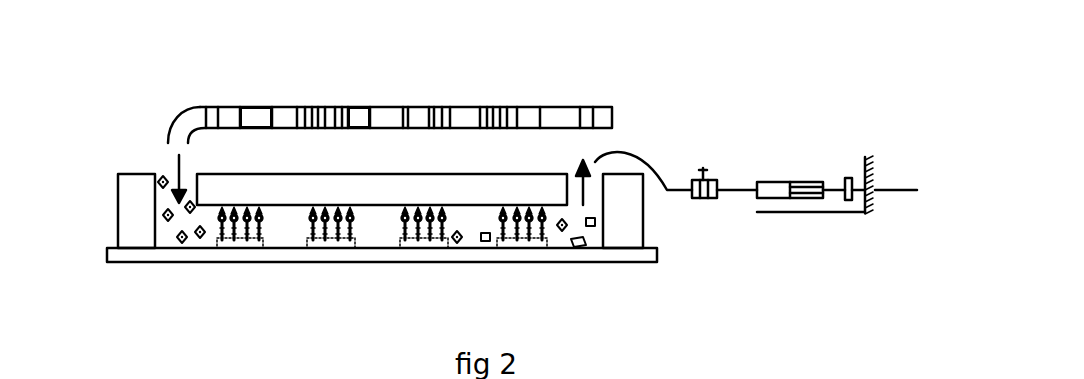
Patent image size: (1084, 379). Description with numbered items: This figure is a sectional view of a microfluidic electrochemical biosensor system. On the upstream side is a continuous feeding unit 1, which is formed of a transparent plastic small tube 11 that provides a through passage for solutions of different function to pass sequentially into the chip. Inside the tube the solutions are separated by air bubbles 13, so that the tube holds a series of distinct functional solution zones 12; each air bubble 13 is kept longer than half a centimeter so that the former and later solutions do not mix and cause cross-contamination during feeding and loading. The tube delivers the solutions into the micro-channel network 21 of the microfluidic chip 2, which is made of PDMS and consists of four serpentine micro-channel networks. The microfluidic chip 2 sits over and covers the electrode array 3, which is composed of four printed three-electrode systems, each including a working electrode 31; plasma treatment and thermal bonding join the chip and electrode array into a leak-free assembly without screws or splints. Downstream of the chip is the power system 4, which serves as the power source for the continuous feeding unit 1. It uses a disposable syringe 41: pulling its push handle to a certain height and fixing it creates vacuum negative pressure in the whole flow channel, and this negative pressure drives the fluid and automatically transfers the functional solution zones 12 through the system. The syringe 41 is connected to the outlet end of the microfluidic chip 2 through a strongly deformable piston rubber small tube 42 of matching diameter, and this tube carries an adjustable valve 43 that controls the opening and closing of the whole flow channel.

The continuous feeding unit 1 is at (470, 100).
The transparent plastic small tube 11 is at (172, 124).
The functional solution zone 12 is at (258, 114).
The air bubble 13 is at (361, 116).
The microfluidic chip 2 is at (118, 210).
The micro-channel network 21 is at (292, 238).
The electrode array 3 is at (578, 246).
The working electrode 31 is at (523, 238).
The power system 4 is at (848, 185).
The disposable syringe 41 is at (773, 183).
The piston rubber small tube 42 is at (717, 197).
The adjustable valve 43 is at (703, 170).